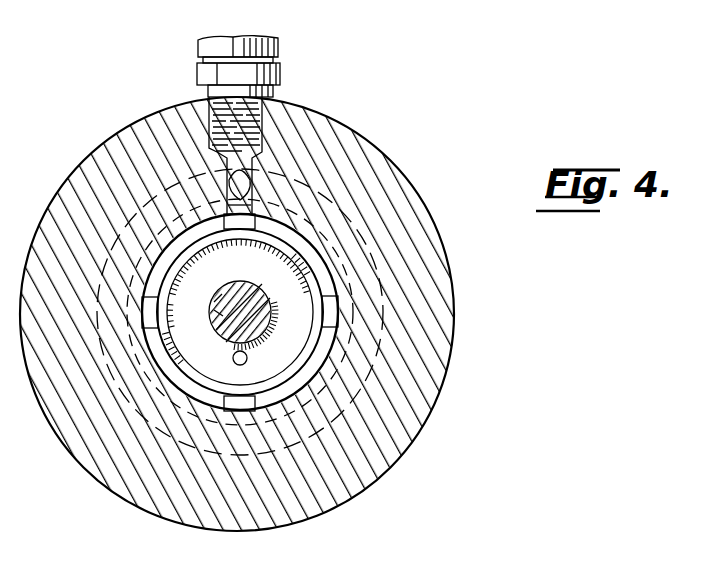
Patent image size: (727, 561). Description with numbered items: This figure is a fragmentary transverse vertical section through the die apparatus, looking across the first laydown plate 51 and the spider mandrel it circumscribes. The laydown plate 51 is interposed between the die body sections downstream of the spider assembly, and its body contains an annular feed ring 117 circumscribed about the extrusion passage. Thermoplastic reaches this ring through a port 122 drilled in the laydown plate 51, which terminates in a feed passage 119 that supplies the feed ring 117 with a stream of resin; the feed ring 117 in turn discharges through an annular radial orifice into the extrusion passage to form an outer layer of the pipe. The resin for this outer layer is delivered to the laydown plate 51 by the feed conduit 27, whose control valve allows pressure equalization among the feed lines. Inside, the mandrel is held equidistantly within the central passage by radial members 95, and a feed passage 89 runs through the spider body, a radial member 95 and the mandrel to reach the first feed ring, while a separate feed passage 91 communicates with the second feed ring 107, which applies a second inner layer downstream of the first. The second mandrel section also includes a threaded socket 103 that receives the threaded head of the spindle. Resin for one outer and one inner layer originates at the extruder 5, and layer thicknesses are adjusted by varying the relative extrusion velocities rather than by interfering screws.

The feed conduit 27 is at (214, 46).
The port 122 is at (259, 99).
The feed passage 119 is at (257, 171).
The annular feed ring 117 is at (176, 196).
The first laydown plate 51 is at (388, 179).
The second feed ring 107 is at (310, 336).
The radial member 95 is at (318, 294).
The feed passage 89 is at (234, 272).
The extruder 5 is at (244, 276).
The threaded socket 103 is at (216, 306).
The feed passage 91 is at (250, 350).